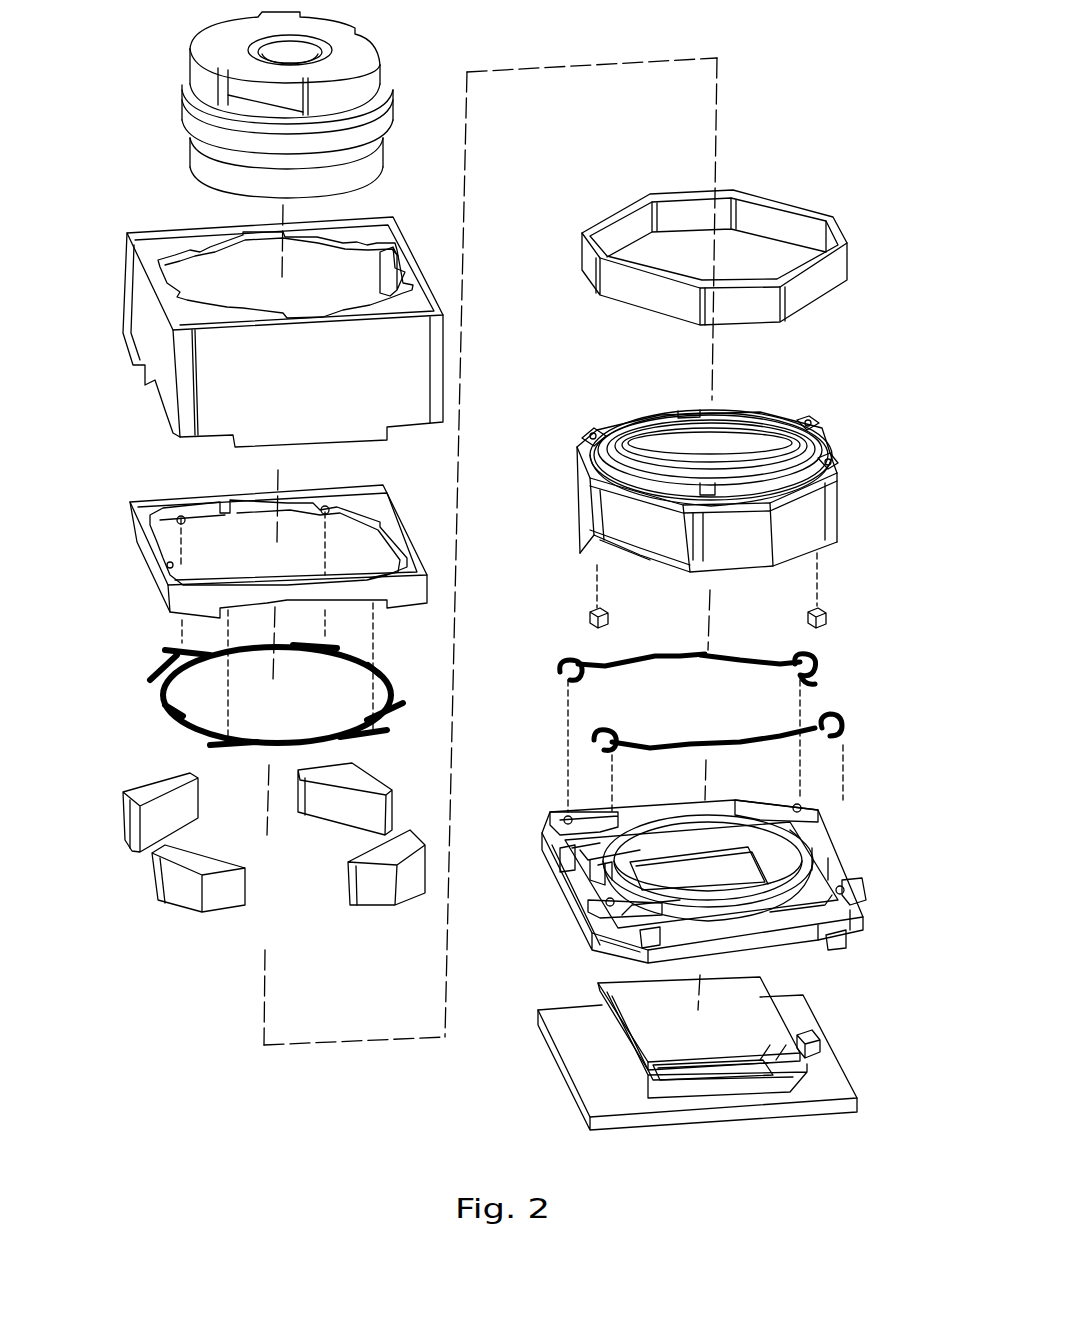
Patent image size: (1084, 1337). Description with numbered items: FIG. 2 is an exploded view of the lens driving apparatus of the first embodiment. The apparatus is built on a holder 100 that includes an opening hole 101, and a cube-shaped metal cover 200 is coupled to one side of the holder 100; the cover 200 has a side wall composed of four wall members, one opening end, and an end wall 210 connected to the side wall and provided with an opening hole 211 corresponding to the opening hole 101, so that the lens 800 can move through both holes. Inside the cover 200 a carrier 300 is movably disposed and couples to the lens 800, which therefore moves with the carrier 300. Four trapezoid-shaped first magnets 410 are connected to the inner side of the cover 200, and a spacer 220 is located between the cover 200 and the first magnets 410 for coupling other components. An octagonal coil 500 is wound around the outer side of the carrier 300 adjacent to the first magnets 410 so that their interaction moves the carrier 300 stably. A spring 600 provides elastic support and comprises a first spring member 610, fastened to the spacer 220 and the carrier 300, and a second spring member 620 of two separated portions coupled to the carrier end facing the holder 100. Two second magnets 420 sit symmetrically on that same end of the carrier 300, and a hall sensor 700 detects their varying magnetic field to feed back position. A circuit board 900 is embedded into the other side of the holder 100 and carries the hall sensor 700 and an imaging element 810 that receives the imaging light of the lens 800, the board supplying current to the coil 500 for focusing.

The holder 100 is at (862, 925).
The opening hole 101 is at (822, 832).
The cover 200 is at (140, 316).
The end wall 210 is at (165, 238).
The opening hole 211 is at (400, 245).
The spacer 220 is at (150, 566).
The carrier 300 is at (822, 494).
The first magnet 410 is at (172, 910).
The second magnet 420 is at (606, 618).
The coil 500 is at (838, 270).
The spring 600 is at (568, 575).
The first spring member 610 is at (385, 690).
The second spring member 620 is at (572, 656).
The hall sensor 700 is at (817, 1052).
The lens 800 is at (205, 76).
The imaging element 810 is at (660, 1070).
The circuit board 900 is at (735, 1113).